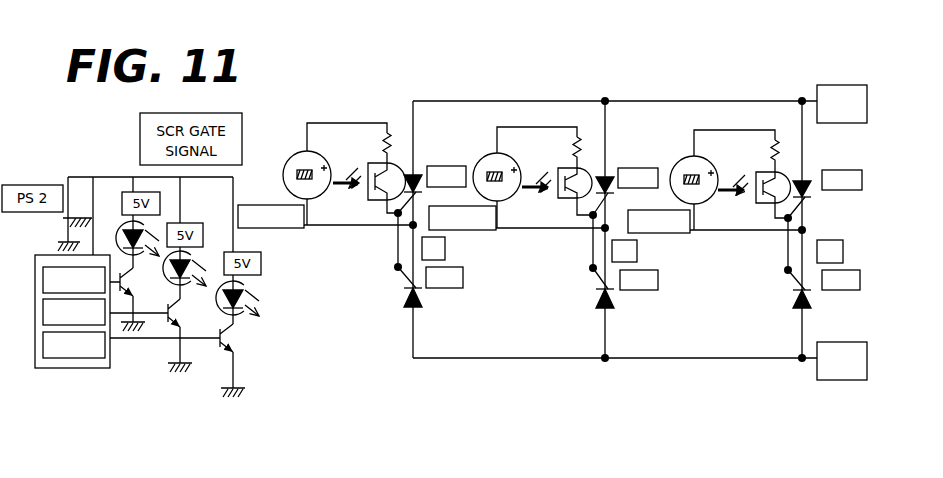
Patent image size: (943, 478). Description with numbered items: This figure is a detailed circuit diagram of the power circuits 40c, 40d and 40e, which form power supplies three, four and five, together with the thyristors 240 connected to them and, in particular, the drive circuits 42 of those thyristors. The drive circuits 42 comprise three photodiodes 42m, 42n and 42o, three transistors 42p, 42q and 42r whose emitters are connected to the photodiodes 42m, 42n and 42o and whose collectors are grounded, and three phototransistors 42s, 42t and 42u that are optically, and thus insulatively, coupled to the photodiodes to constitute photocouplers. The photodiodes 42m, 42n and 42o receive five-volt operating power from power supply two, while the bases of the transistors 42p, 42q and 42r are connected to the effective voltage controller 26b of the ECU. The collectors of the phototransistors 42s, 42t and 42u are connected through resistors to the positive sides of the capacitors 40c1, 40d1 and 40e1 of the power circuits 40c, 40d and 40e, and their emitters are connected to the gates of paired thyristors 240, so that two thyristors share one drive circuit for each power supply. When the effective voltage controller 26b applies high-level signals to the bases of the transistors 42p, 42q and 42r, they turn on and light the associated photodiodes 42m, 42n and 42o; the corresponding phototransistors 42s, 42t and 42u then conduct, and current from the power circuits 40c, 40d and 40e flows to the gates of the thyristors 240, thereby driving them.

The drive circuits 42 is at (715, 81).
The photodiode 42m is at (118, 232).
The photodiode 42n is at (208, 250).
The photodiode 42o is at (237, 334).
The transistor 42p is at (136, 285).
The transistor 42q is at (182, 320).
The transistor 42r is at (257, 355).
The phototransistor 42s is at (381, 163).
The phototransistor 42t is at (569, 200).
The phototransistor 42u is at (761, 170).
The power circuit 40c is at (283, 231).
The capacitor 40c1 is at (316, 152).
The power circuit 40d is at (467, 232).
The capacitor 40d1 is at (478, 165).
The power circuit 40e is at (670, 235).
The capacitor 40e1 is at (676, 170).
The effective voltage controller 26b is at (50, 370).
The thyristors 240 is at (93, 366).